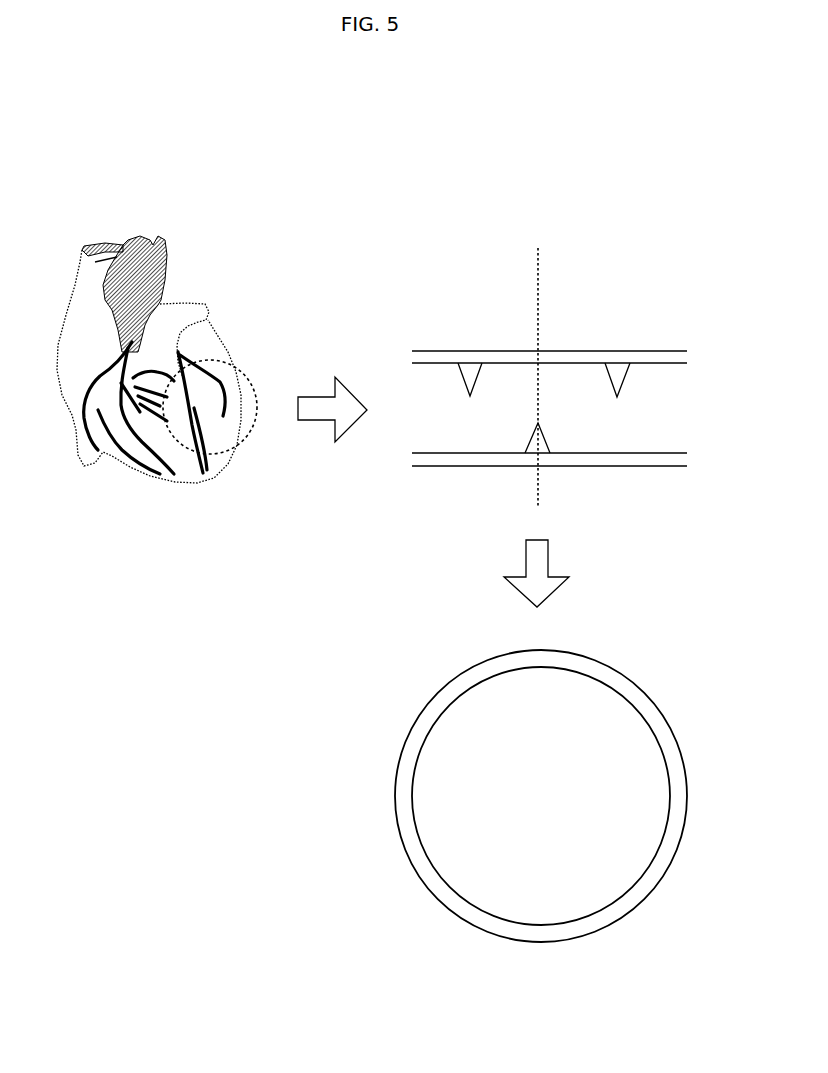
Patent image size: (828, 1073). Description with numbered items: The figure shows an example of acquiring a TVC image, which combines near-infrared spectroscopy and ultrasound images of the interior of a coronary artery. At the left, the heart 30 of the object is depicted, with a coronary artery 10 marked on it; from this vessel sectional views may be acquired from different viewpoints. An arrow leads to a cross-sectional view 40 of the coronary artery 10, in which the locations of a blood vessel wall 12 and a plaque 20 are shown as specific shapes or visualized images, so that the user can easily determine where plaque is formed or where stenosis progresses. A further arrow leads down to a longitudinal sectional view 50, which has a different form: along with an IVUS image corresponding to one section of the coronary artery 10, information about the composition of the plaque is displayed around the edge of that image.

The heart 30 is at (154, 228).
The coronary artery 10 is at (212, 358).
The cross-sectional view 40 is at (631, 333).
The blood vessel wall 12 is at (496, 356).
The plaque 20 is at (548, 428).
The longitudinal sectional view 50 is at (397, 793).